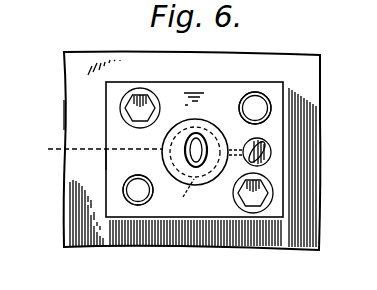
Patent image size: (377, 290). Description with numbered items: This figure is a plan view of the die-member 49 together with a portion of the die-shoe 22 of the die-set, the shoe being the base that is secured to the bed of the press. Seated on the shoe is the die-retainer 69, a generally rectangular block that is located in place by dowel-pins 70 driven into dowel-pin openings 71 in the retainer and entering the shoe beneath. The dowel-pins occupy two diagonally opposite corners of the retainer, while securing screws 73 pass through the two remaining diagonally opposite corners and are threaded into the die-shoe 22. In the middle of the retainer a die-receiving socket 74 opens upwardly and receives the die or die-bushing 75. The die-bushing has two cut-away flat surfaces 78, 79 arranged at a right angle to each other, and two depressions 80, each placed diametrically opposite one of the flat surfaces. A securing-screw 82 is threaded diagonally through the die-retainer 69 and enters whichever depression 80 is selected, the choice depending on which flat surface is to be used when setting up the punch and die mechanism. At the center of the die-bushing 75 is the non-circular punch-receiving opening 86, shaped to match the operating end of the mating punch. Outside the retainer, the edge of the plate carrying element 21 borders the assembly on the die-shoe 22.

The casing plate 21 is at (305, 64).
The die-shoe 22 is at (79, 115).
The die-member 49 is at (199, 89).
The die-retainer 69 is at (121, 160).
The dowel-pins 70 is at (255, 108).
The dowel-pin openings 71 is at (268, 100).
The securing screws 73 is at (140, 105).
The die-receiving socket 74 is at (163, 143).
The die-bushing 75 is at (167, 158).
The cut-away flat surface 78 is at (186, 192).
The cut-away flat surface 79 is at (91, 150).
The depressions 80 is at (193, 120).
The securing-screw 82 is at (271, 151).
The punch-receiving opening 86 is at (198, 156).